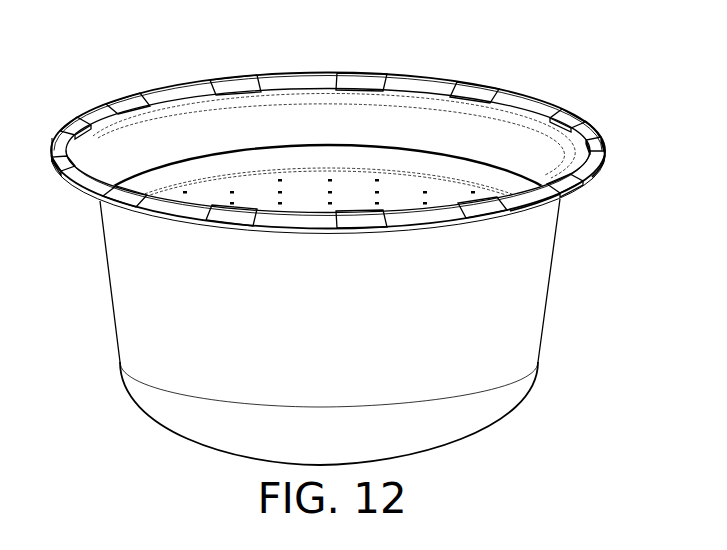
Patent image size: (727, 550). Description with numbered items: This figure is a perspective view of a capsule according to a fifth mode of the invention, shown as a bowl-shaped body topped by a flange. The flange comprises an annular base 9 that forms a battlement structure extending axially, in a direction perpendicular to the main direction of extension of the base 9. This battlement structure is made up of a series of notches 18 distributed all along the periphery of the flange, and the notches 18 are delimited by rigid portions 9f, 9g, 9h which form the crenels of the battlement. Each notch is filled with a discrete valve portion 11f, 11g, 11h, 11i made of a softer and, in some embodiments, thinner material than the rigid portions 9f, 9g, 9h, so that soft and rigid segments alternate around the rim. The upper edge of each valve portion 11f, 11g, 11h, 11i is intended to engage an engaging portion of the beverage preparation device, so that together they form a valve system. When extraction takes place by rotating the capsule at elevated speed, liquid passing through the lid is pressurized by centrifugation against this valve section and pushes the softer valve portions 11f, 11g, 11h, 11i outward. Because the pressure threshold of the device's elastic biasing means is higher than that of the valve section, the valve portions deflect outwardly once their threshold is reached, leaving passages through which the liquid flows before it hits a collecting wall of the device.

The annular base 9 is at (426, 72).
The notch 18 is at (566, 102).
The valve portion 11f is at (569, 106).
The rigid portion 9f is at (593, 122).
The valve portion 11g is at (606, 145).
The rigid portion 9g is at (606, 164).
The valve portion 11h is at (583, 192).
The rigid portion 9h is at (537, 203).
The valve portion 11i is at (487, 212).